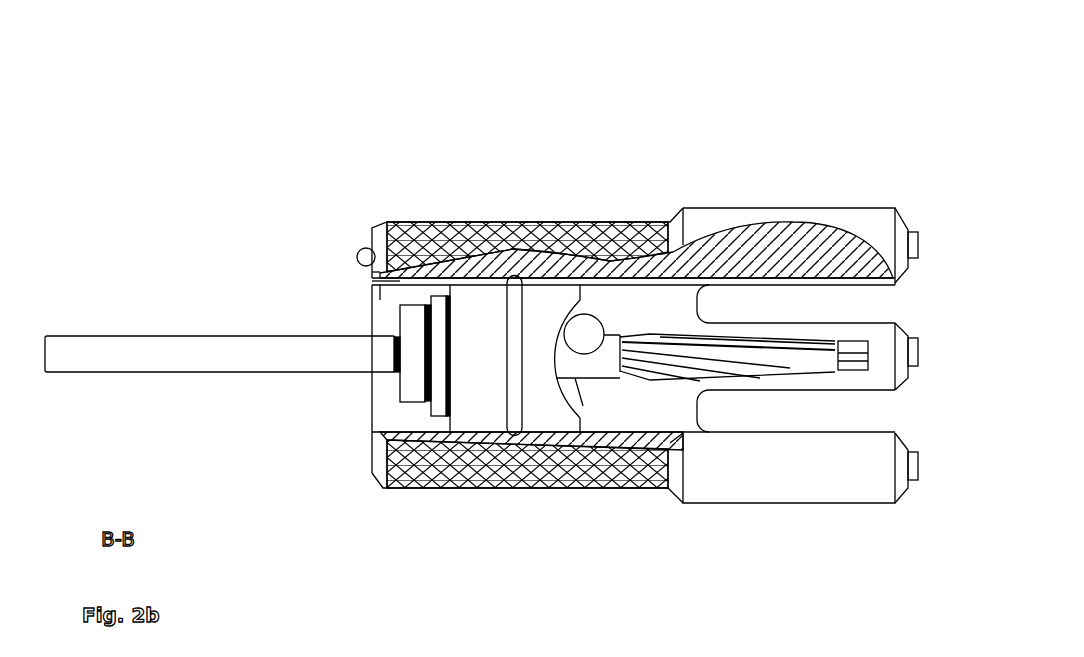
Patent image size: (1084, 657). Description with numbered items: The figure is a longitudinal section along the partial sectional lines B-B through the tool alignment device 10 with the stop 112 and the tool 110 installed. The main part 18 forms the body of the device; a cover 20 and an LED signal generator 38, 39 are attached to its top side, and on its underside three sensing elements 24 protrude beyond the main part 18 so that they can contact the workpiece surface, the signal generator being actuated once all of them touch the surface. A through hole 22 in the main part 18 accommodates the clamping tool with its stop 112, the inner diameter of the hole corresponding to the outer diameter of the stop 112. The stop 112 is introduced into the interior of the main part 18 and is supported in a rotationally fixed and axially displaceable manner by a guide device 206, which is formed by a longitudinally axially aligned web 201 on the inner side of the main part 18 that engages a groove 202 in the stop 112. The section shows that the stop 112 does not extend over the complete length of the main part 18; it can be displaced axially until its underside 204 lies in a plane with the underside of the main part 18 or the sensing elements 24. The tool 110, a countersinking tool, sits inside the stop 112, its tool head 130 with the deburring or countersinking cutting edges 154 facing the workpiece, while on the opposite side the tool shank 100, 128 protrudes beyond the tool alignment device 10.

The tool alignment device 10 is at (632, 80).
The main part 18 is at (715, 226).
The cover 20 is at (377, 465).
The through hole 22 is at (767, 424).
The sensing elements 24 is at (915, 238).
The sealing ring 38 is at (364, 250).
The LED signal generator 39 is at (332, 205).
The drive shaft 100 is at (175, 357).
The tool shank 128 is at (222, 393).
The tool 110 is at (795, 340).
The stop 112 is at (465, 293).
The tool head 130 is at (846, 344).
The deburring or countersinking cutting edges 154 is at (838, 372).
The web 201 is at (378, 281).
The groove 202 is at (383, 297).
The underside of the stop 204 is at (597, 265).
The guide device 206 is at (364, 276).